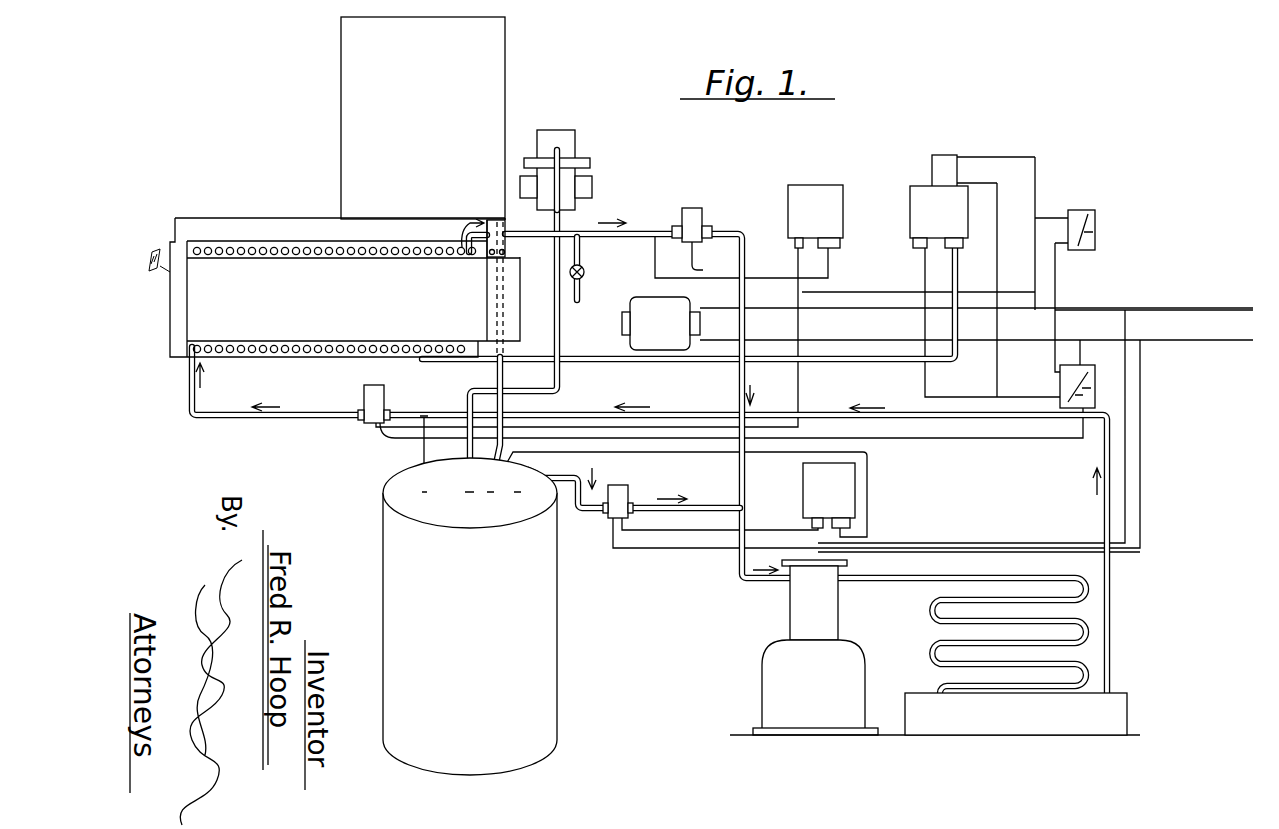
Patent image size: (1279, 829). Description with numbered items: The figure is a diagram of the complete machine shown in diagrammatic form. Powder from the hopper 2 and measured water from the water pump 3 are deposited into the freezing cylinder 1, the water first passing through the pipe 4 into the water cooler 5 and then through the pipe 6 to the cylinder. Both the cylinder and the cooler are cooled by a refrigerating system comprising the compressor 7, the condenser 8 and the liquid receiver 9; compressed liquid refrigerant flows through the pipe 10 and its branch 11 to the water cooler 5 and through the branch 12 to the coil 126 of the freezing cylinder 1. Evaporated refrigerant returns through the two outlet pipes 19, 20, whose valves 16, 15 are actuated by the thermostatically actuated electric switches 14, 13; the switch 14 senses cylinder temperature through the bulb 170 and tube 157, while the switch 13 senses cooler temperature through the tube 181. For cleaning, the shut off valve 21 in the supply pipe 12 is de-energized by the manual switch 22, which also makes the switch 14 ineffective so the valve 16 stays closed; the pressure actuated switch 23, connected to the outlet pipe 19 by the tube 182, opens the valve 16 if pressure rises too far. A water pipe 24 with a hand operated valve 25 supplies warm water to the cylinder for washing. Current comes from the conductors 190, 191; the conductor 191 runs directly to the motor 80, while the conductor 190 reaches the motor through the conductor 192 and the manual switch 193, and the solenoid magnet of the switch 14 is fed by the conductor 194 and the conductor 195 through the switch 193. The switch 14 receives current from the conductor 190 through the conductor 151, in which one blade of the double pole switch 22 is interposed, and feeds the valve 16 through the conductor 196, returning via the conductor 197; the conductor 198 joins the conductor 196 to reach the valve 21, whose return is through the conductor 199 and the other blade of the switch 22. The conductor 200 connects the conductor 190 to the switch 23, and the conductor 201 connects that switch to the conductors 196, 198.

The freezing cylinder 1 is at (334, 287).
The hopper 2 is at (423, 118).
The water pump 3 is at (566, 142).
The pipe 4 is at (560, 218).
The water cooler 5 is at (470, 616).
The pipe 6 is at (503, 372).
The compressor 7 is at (935, 647).
The condenser 8 is at (948, 612).
The liquid receiver 9 is at (1016, 714).
The pipe 10 is at (925, 413).
The branch 11 is at (418, 486).
The branch 12 is at (330, 413).
The thermostatically actuated electric switch 13 is at (829, 495).
The thermostatically actuated electric switch 14 is at (939, 201).
The valve 15 is at (608, 516).
The valve 16 is at (690, 212).
The outlet pipe 19 is at (658, 222).
The outlet pipe 20 is at (694, 508).
The shut off valve 21 is at (384, 398).
The manual switch 22 is at (1095, 390).
The pressure actuated switch 23 is at (815, 216).
The water pipe 24 is at (584, 254).
The hand operated valve 25 is at (583, 278).
The motor 80 is at (661, 323).
The coil 126 is at (300, 352).
The conductor 151 is at (922, 325).
The tube 157 is at (620, 364).
The bulb 170 is at (422, 360).
The tube 181 is at (654, 453).
The tube 182 is at (788, 290).
The conductor 190 is at (1228, 307).
The conductor 191 is at (794, 335).
The conductor 192 is at (1030, 277).
The manual switch 193 is at (1092, 232).
The conductor 194 is at (1006, 218).
The conductor 195 is at (1002, 157).
The conductor 196 is at (723, 230).
The conductor 197 is at (684, 268).
The conductor 198 is at (800, 372).
The conductor 199 is at (395, 443).
The conductor 200 is at (918, 276).
The conductor 201 is at (802, 245).